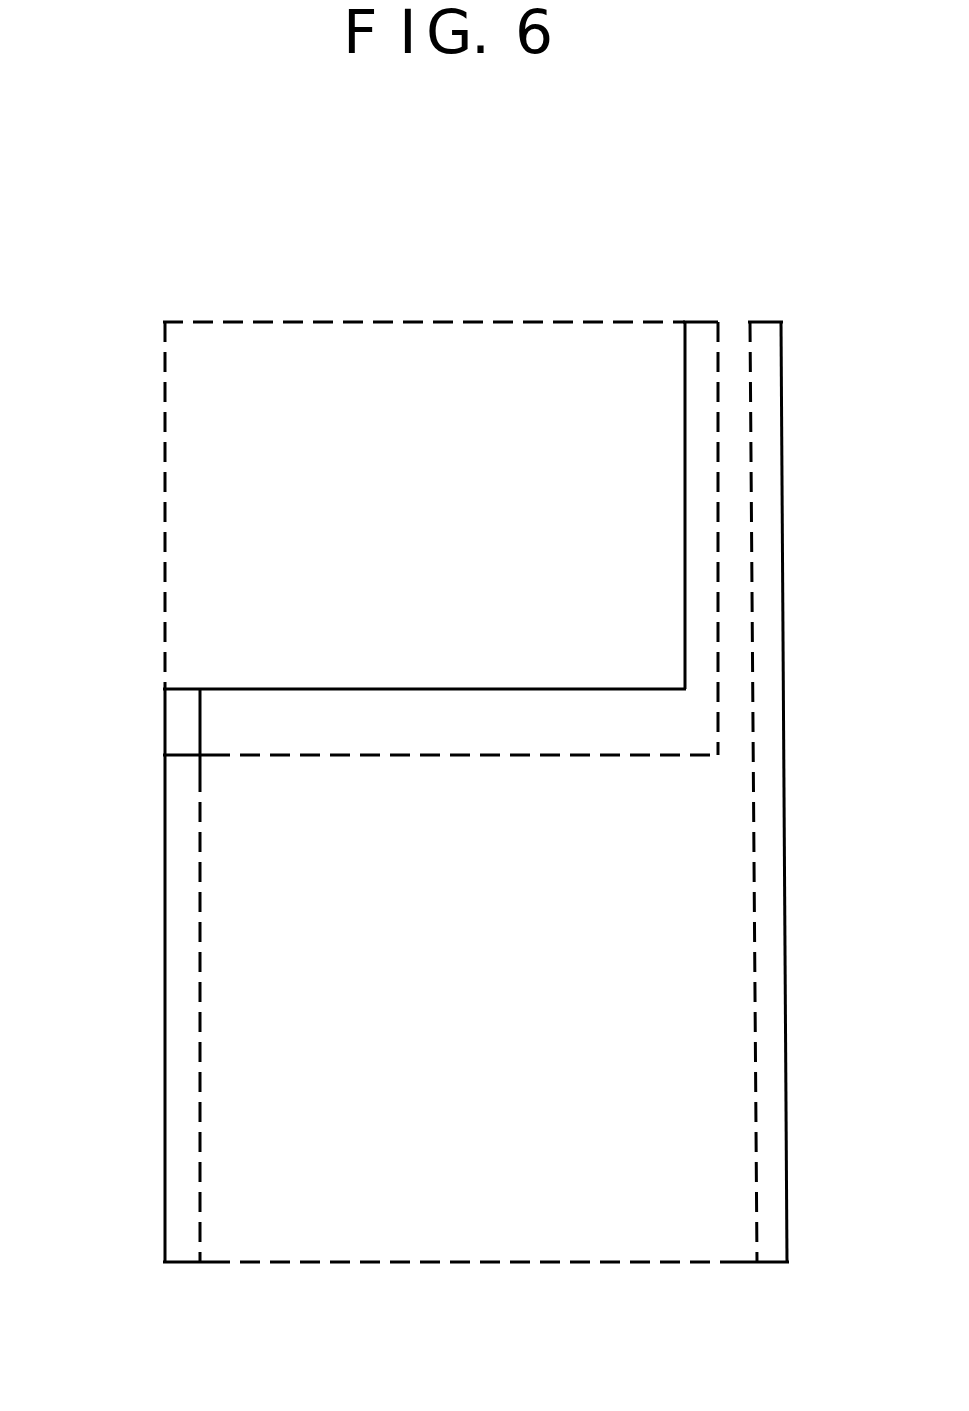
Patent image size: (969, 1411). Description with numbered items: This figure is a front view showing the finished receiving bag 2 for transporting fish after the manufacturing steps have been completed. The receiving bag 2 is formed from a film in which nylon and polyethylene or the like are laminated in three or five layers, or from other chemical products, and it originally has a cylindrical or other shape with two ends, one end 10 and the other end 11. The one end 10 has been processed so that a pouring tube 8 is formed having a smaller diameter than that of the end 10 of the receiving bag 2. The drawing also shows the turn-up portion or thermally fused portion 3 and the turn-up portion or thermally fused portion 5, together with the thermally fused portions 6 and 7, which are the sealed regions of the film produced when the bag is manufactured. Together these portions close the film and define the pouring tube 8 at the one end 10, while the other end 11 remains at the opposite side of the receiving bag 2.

The receiving bag 2 is at (785, 851).
The turn-up portion or thermally fused portion 3 is at (768, 960).
The turn-up portion or thermally fused portion 5 is at (182, 1022).
The thermally fused portion 6 is at (445, 735).
The thermally fused portion 7 is at (700, 447).
The pouring tube 8 is at (802, 792).
The one end of the receiving bag 10 is at (453, 320).
The other end of the receiving bag 11 is at (663, 1265).